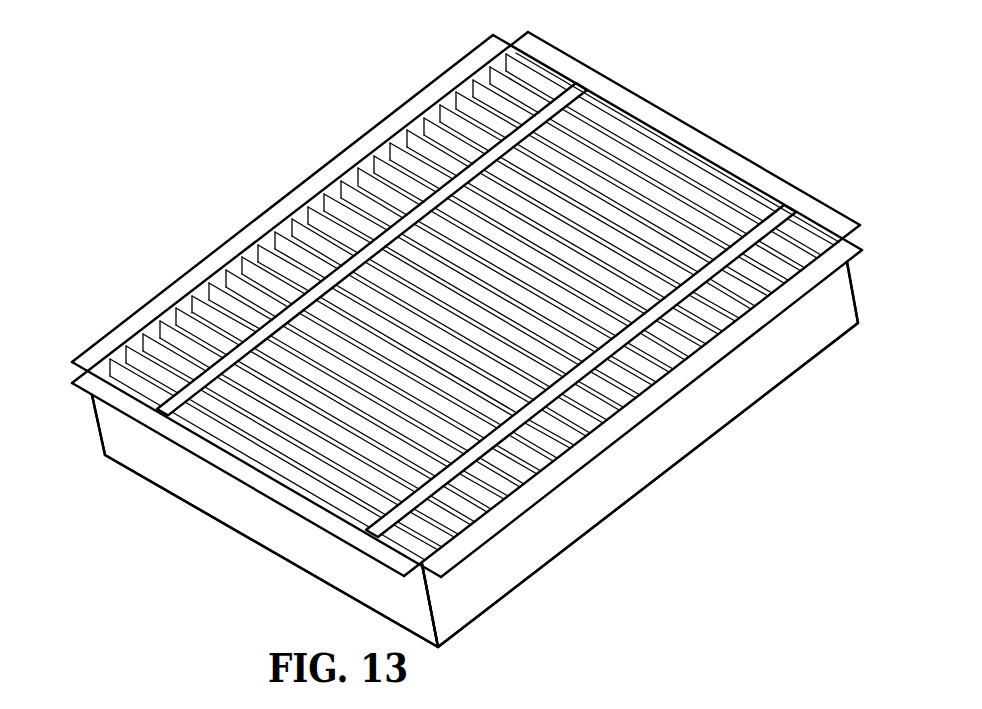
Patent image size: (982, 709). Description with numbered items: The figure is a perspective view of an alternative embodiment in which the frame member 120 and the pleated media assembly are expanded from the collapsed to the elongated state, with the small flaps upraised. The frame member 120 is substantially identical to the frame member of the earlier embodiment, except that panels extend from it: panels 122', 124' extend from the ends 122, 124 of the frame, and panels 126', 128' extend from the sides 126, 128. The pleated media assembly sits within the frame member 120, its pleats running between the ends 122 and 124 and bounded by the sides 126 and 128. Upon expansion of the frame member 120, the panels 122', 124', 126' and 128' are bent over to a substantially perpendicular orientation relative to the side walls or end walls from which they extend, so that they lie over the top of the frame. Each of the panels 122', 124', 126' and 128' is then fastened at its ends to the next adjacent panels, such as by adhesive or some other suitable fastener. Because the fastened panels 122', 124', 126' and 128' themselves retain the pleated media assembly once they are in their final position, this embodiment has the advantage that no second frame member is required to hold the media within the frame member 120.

The frame member 120 is at (210, 558).
The end 122 is at (265, 521).
The panel 122' is at (256, 469).
The end 124 is at (872, 252).
The panel 124' is at (677, 141).
The side 126 is at (640, 454).
The panel 126' is at (633, 401).
The side 128 is at (66, 425).
The panel 128' is at (300, 207).